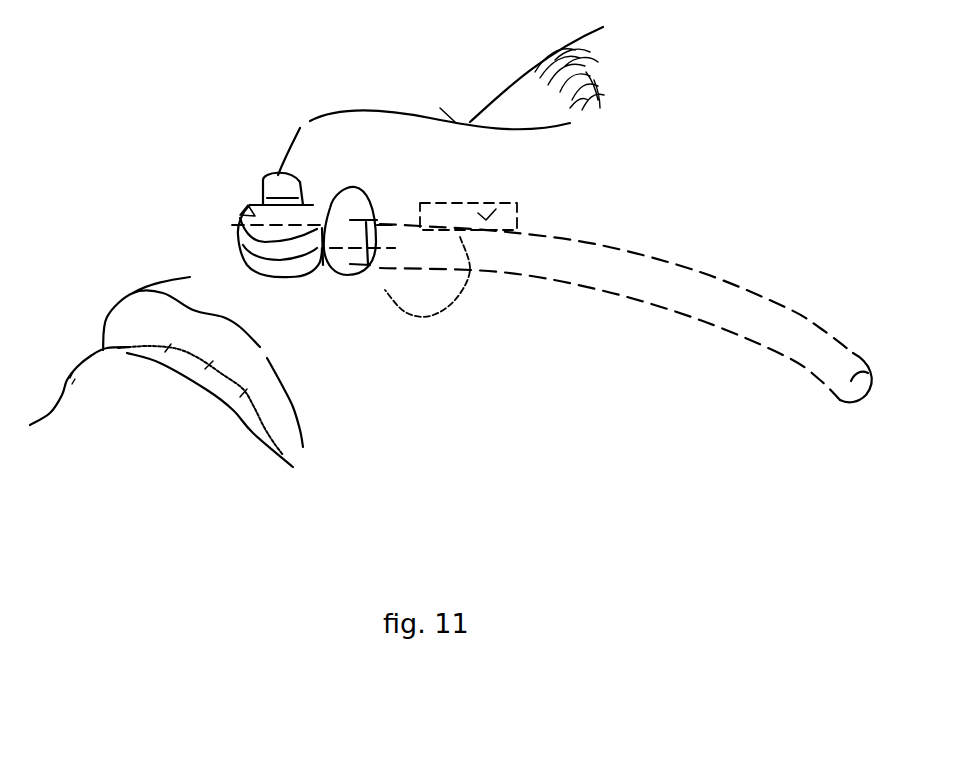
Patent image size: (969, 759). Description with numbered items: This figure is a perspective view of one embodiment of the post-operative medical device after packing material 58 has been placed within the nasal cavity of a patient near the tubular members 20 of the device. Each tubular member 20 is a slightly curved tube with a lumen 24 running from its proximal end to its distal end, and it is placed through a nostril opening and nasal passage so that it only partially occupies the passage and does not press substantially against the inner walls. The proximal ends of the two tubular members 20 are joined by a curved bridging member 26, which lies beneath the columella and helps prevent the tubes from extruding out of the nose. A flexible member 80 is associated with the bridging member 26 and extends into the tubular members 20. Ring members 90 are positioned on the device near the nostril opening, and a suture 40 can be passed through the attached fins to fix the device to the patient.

The tubular member 20 is at (260, 200).
The lumen 24 is at (243, 230).
The bridging member 26 is at (243, 260).
The suture 40 is at (497, 203).
The packing material 58 is at (268, 197).
The flexible member 80 is at (312, 208).
The ring member 90 is at (288, 240).